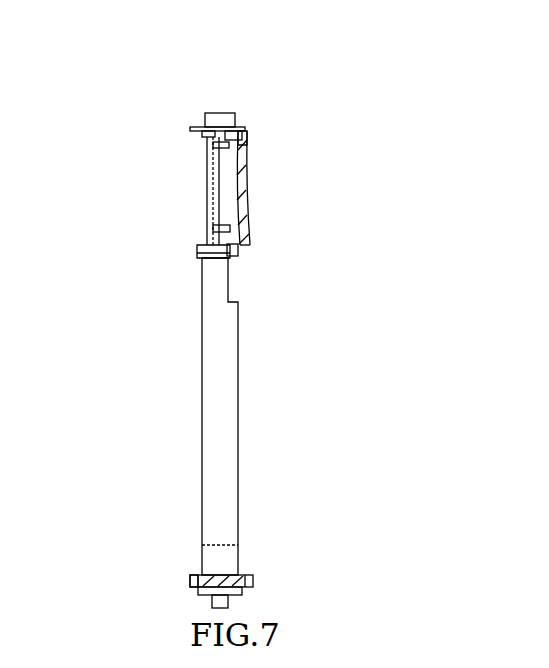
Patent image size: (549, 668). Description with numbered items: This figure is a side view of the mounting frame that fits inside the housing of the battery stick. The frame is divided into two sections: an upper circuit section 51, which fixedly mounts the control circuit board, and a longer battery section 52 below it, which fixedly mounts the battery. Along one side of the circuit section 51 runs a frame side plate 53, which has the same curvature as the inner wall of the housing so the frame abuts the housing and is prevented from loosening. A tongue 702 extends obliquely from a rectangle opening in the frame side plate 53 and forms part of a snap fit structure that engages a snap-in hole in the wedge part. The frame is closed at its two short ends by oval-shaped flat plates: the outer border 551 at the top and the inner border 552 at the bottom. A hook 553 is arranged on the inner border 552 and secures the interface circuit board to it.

The outer border 551 is at (208, 120).
The tongue 702 is at (253, 141).
The circuit section 51 is at (207, 209).
The frame side plate 53 is at (257, 215).
The battery section 52 is at (220, 431).
The inner border 552 is at (257, 571).
The hook 553 is at (185, 571).